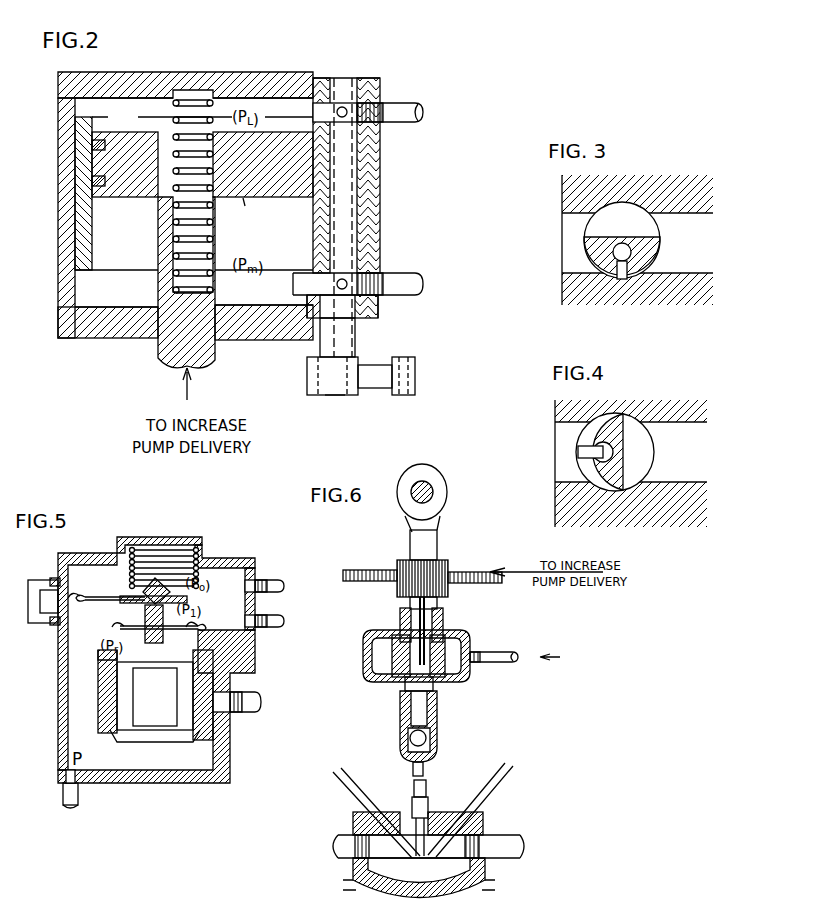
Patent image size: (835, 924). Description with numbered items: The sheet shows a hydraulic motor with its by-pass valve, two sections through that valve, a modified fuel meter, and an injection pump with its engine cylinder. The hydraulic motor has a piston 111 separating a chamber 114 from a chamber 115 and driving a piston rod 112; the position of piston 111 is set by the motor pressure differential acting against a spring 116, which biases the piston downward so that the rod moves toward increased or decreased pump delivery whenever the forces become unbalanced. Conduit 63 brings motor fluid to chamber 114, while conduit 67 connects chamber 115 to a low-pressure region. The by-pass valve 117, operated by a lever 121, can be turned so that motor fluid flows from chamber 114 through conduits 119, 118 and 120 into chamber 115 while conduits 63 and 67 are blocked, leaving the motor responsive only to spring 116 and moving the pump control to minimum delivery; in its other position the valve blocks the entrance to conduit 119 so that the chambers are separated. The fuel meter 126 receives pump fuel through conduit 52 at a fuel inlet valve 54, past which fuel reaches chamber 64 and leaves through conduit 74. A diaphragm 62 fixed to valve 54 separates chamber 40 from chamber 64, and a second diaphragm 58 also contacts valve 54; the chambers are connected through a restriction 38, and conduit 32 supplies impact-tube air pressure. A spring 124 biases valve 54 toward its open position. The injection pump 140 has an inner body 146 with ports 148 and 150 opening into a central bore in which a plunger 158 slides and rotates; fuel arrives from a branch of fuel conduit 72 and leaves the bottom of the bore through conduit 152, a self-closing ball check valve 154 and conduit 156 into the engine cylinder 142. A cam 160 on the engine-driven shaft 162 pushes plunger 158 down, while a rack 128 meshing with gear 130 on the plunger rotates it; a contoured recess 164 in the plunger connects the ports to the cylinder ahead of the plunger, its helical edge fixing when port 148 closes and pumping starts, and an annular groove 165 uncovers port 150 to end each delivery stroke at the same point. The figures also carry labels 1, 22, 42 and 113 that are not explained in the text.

In FIG. 3, the passage 1 is at (625, 214).
In FIG. 4, the passage 1 is at (645, 443).
In FIG. 5, the valve member 22 is at (232, 591).
In FIG. 5, the conduit 32 is at (281, 576).
In FIG. 5, the restriction 38 is at (30, 606).
In FIG. 5, the chamber 40 is at (226, 631).
In FIG. 5, the pressure port 42 is at (263, 610).
In FIG. 5, the conduit 52 is at (247, 716).
In FIG. 5, the fuel inlet valve 54 is at (133, 708).
In FIG. 5, the second diaphragm 58 is at (68, 600).
In FIG. 5, the diaphragm 62 is at (103, 625).
In FIG. 2, the conduit 63 is at (407, 279).
In FIG. 3, the conduit 63 is at (705, 263).
In FIG. 5, the chamber 64 is at (153, 649).
In FIG. 2, the conduit 67 is at (413, 104).
In FIG. 6, the fuel conduit 72 is at (498, 664).
In FIG. 5, the conduit 74 is at (62, 802).
In FIG. 2, the piston 111 is at (257, 207).
In FIG. 2, the piston rod 112 is at (207, 351).
In FIG. 2, the housing 113 is at (57, 262).
In FIG. 2, the chamber 114 is at (137, 249).
In FIG. 3, the chamber 114 is at (540, 249).
In FIG. 4, the chamber 114 is at (537, 443).
In FIG. 2, the chamber 115 is at (137, 126).
In FIG. 2, the spring 116 is at (213, 78).
In FIG. 2, the by-pass valve 117 is at (380, 226).
In FIG. 3, the by-pass valve 117 is at (658, 241).
In FIG. 4, the by-pass valve 117 is at (612, 484).
In FIG. 2, the conduit 118 is at (352, 200).
In FIG. 3, the conduit 118 is at (632, 276).
In FIG. 4, the conduit 118 is at (603, 482).
In FIG. 2, the conduit 119 is at (378, 318).
In FIG. 3, the conduit 119 is at (614, 275).
In FIG. 4, the conduit 119 is at (582, 449).
In FIG. 2, the conduit 120 is at (344, 103).
In FIG. 2, the lever 121 is at (378, 390).
In FIG. 5, the spring 124 is at (200, 557).
In FIG. 5, the fuel meter 126 is at (52, 714).
In FIG. 6, the rack 128 is at (356, 570).
In FIG. 6, the gear 130 is at (458, 565).
In FIG. 6, the injection pump 140 is at (357, 671).
In FIG. 6, the cylinder 142 is at (453, 818).
In FIG. 6, the inner body 146 is at (378, 683).
In FIG. 6, the port 148 is at (398, 632).
In FIG. 6, the port 150 is at (468, 639).
In FIG. 6, the conduit 152 is at (420, 717).
In FIG. 6, the ball check valve 154 is at (426, 739).
In FIG. 6, the conduit 156 is at (424, 768).
In FIG. 6, the plunger 158 is at (410, 603).
In FIG. 6, the cam 160 is at (401, 515).
In FIG. 6, the shaft 162 is at (446, 491).
In FIG. 6, the contoured recess 164 is at (443, 674).
In FIG. 6, the annular groove 165 is at (432, 628).